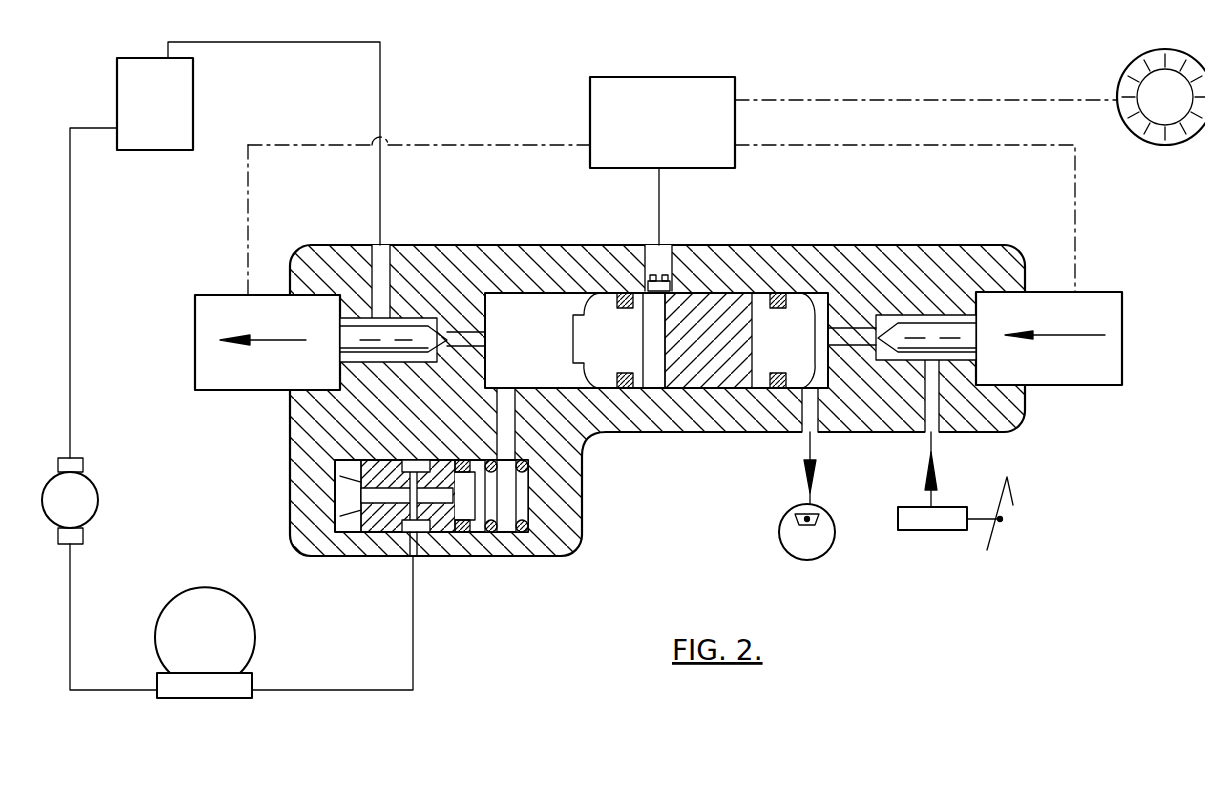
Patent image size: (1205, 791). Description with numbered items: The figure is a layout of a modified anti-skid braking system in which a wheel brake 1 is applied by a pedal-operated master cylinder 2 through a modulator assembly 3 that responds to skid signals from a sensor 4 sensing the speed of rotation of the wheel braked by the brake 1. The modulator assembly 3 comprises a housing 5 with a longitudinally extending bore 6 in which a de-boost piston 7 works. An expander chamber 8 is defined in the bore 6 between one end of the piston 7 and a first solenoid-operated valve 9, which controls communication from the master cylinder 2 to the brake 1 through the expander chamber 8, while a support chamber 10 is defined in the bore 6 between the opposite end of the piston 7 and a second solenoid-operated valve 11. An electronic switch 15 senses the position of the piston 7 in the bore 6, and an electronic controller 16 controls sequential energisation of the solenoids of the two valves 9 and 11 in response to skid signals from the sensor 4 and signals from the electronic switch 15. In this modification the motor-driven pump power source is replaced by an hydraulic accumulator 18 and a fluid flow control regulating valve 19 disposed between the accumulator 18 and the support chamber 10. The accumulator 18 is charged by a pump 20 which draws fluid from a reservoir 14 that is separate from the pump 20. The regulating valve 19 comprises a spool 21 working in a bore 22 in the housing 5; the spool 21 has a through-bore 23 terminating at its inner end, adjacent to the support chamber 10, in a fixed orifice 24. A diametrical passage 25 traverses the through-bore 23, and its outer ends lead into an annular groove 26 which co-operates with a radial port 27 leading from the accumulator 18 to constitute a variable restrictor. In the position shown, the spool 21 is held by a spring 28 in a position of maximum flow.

The wheel brake 1 is at (800, 544).
The pedal-operated master cylinder 2 is at (925, 521).
The modulator assembly 3 is at (733, 262).
The sensor 4 is at (1169, 135).
The housing 5 is at (439, 553).
The longitudinally extending bore 6 is at (582, 452).
The de-boost piston 7 is at (700, 389).
The expander chamber 8 is at (832, 397).
The first solenoid-operated valve 9 is at (1072, 357).
The support chamber 10 is at (538, 307).
The second solenoid-operated valve 11 is at (259, 376).
The reservoir 14 is at (137, 92).
The electronic switch 15 is at (648, 290).
The electronic controller 16 is at (607, 101).
The hydraulic accumulator 18 is at (192, 612).
The fluid flow control regulating valve 19 is at (491, 540).
The pump 20 is at (88, 502).
The spool 21 is at (378, 528).
The bore 22 is at (352, 533).
The through-bore 23 is at (345, 486).
The fixed orifice 24 is at (510, 531).
The diametrical passage 25 is at (456, 537).
The annular groove 26 is at (407, 530).
The radial port 27 is at (414, 548).
The spring 28 is at (530, 527).